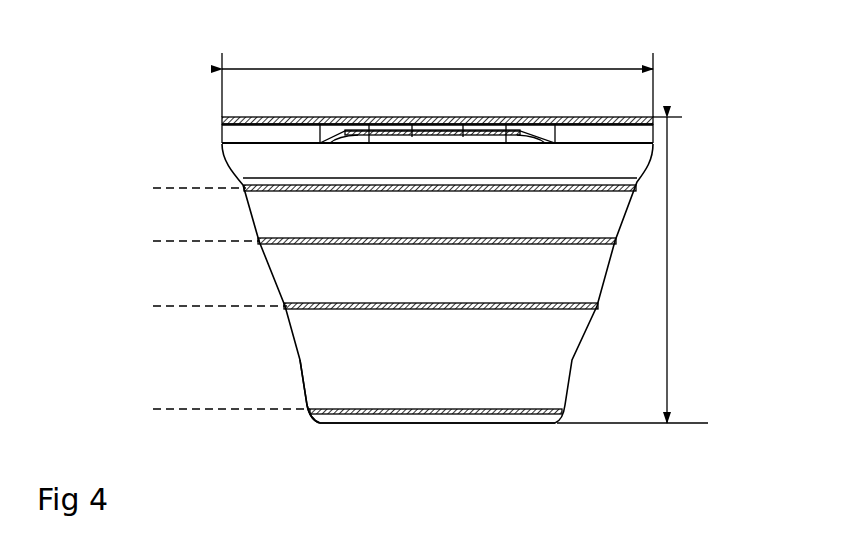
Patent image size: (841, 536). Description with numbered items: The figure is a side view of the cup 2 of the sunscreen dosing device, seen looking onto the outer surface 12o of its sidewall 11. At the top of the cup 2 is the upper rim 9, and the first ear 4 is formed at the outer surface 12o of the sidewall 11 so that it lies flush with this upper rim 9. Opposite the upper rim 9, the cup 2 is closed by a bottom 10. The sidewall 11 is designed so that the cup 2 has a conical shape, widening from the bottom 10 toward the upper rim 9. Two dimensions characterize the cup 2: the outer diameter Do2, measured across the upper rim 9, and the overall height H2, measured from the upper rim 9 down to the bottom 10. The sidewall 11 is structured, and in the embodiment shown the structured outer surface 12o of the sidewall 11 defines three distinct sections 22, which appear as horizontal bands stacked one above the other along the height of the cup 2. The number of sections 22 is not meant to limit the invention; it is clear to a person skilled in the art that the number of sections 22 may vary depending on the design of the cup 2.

The cup 2 is at (205, 153).
The first ear 4 is at (398, 130).
The upper rim 9 is at (305, 118).
The bottom 10 is at (468, 425).
The sidewall 11 is at (300, 372).
The outer surface 12o is at (553, 273).
The sections 22 is at (158, 215).
The outer diameter Do2 is at (505, 70).
The overall height H2 is at (665, 223).